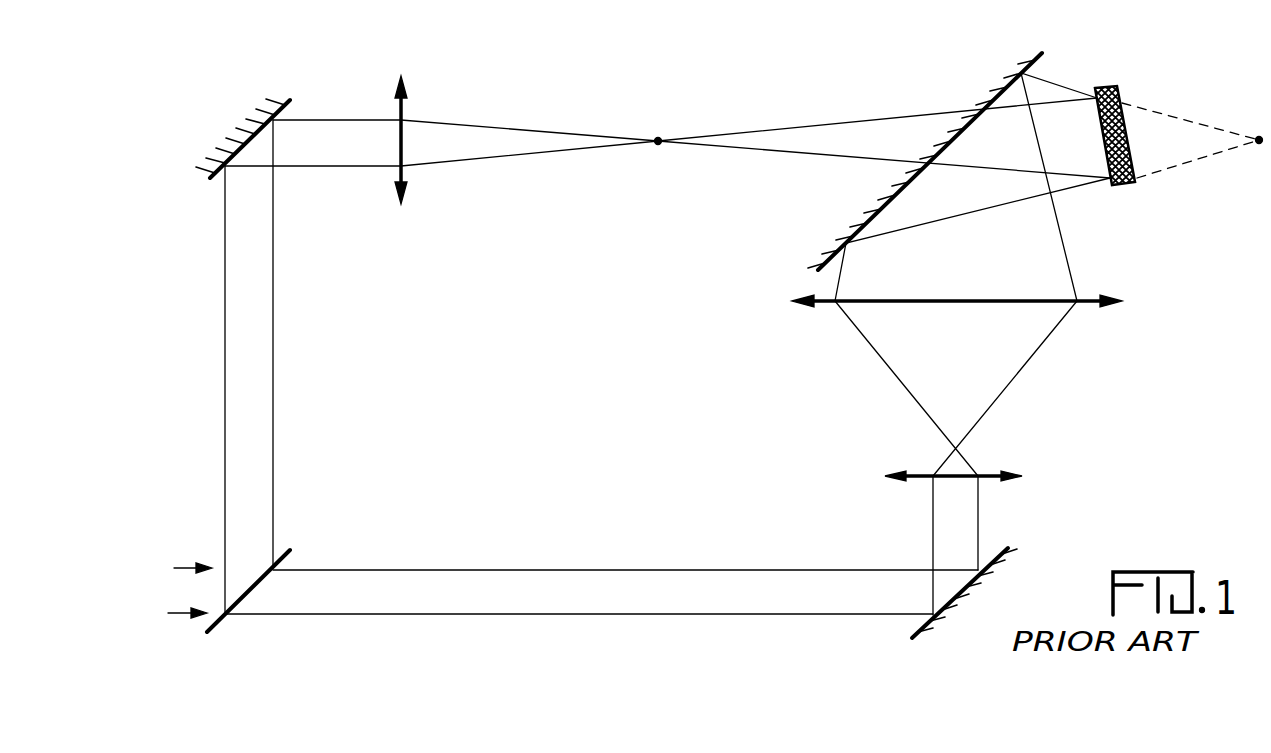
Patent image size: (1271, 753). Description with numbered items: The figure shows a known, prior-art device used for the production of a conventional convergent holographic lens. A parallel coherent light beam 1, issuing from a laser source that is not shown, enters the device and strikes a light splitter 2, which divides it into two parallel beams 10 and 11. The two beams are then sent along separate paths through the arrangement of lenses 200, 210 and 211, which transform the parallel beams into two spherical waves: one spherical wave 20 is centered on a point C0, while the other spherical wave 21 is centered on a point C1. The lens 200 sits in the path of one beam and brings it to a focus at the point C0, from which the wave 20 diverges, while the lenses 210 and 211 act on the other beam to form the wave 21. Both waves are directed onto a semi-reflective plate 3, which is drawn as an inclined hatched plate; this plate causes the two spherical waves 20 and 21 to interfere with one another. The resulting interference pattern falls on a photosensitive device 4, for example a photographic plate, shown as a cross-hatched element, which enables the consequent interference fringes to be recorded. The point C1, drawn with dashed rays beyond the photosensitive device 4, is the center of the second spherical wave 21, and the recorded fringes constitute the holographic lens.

The parallel coherent light beam 1 is at (192, 590).
The light splitter 2 is at (290, 558).
The semi-reflective plate 3 is at (912, 183).
The photosensitive device 4 is at (1125, 112).
The parallel beam 10 is at (658, 582).
The parallel beam 11 is at (262, 392).
The spherical wave 20 is at (866, 126).
The spherical wave 21 is at (1052, 268).
The lens 200 is at (403, 159).
The lens 210 is at (980, 479).
The lens 211 is at (981, 304).
The center point C0 is at (660, 145).
The center point C1 is at (1254, 165).